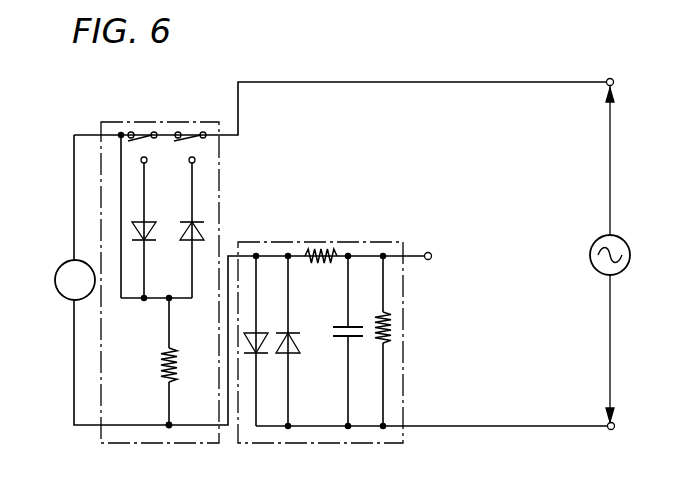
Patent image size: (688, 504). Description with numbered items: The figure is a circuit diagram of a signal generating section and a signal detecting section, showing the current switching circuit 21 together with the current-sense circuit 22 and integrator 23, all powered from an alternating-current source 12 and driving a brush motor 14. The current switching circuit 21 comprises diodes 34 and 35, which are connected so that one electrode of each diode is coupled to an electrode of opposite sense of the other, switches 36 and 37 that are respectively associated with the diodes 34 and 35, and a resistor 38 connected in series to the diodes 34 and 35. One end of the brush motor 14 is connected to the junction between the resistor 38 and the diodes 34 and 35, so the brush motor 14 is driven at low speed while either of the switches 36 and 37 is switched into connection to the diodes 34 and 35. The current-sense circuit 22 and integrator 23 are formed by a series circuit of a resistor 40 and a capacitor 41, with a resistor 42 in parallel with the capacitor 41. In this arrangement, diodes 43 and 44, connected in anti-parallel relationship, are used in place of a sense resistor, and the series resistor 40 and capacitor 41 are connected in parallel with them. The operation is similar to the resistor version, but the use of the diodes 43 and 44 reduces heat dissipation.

The AC power source 12 is at (593, 241).
The brush motor 14 is at (62, 266).
The current switching circuit 21 is at (178, 285).
The current-sense circuit 22 is at (340, 344).
The integrator 23 is at (340, 344).
The diode 34 is at (151, 221).
The diode 35 is at (204, 239).
The switch 36 is at (141, 132).
The switch 37 is at (189, 132).
The resistor 38 is at (162, 362).
The resistor 40 is at (325, 242).
The capacitor 41 is at (345, 327).
The resistor 42 is at (391, 318).
The diode 43 is at (262, 354).
The diode 44 is at (294, 355).